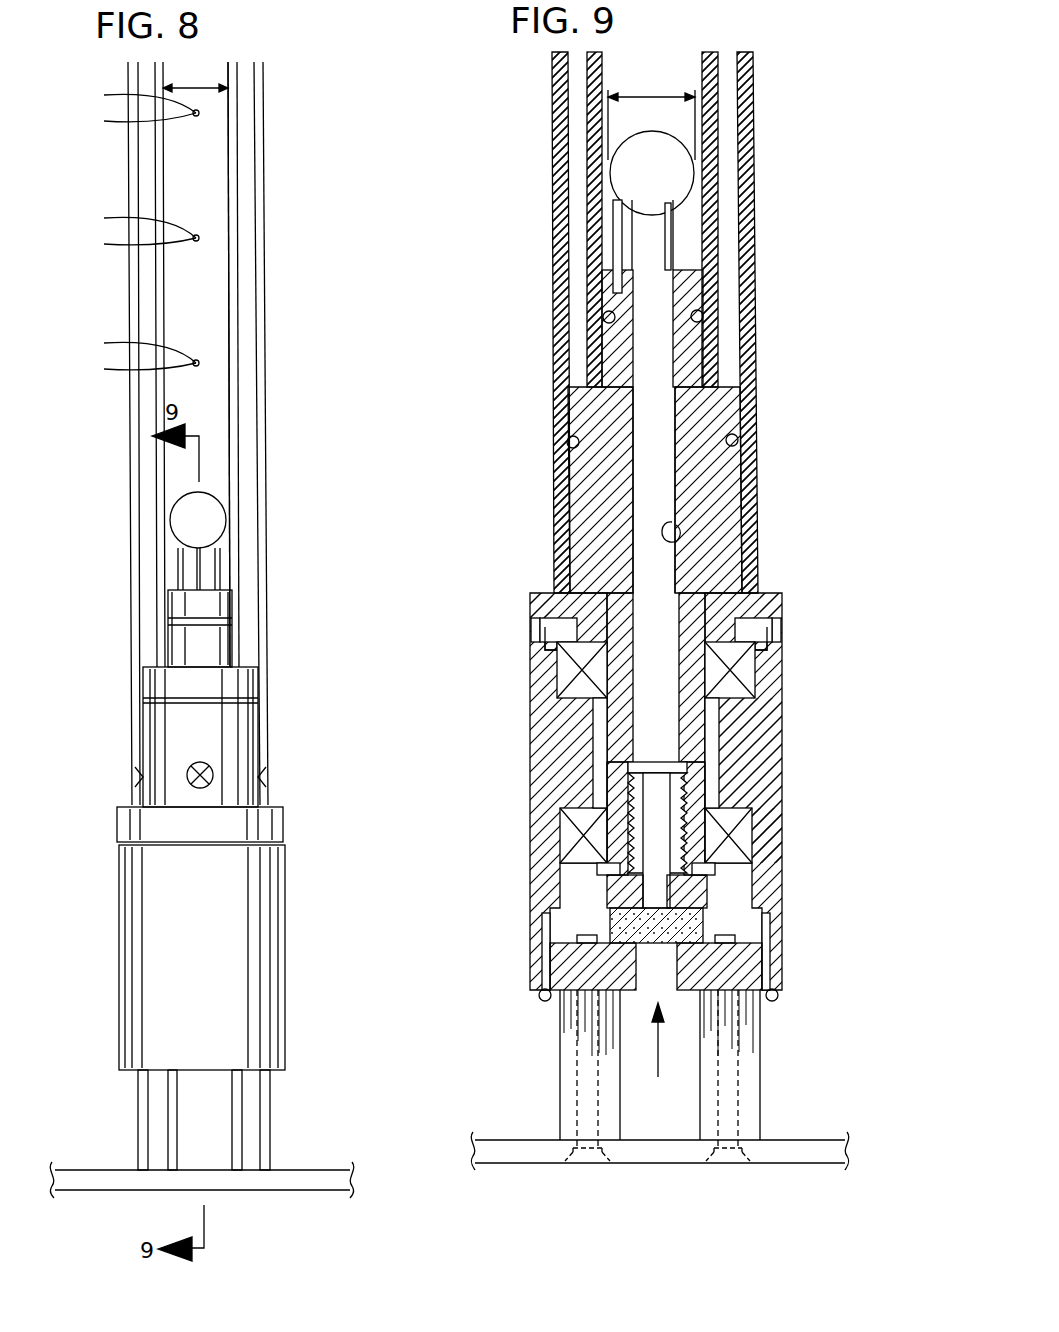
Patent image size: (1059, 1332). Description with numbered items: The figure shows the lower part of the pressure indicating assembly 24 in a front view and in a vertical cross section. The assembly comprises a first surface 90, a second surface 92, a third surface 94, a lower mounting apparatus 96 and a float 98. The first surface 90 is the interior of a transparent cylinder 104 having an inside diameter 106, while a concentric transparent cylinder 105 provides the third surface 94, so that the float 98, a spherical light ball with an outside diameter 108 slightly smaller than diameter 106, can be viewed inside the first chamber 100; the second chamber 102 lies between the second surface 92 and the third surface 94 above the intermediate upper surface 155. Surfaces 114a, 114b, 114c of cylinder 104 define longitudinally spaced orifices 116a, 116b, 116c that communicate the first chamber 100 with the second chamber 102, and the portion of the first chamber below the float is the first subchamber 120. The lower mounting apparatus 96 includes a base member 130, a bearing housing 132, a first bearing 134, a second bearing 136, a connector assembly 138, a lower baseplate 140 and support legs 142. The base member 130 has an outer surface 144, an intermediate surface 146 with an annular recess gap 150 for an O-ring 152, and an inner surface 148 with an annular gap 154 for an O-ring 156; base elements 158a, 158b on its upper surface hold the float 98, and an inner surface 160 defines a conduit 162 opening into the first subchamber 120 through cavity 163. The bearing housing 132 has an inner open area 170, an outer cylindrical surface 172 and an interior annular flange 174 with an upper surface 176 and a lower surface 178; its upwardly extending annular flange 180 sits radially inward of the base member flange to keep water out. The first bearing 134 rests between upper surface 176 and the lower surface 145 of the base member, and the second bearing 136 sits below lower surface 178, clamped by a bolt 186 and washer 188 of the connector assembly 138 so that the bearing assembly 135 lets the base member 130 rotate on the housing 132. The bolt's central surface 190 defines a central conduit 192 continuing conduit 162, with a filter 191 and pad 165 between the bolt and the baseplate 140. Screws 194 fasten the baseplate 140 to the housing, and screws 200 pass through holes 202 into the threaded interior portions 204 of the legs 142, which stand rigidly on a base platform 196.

In FIG. 8, the pressure indicating assembly 24 is at (260, 433).
In FIG. 8, the first surface 90 is at (231, 186).
In FIG. 8, the second surface 92 is at (240, 213).
In FIG. 8, the third surface 94 is at (247, 249).
In FIG. 8, the lower mounting apparatus 96 is at (297, 816).
In FIG. 8, the float 98 is at (212, 520).
In FIG. 9, the float 98 is at (680, 173).
In FIG. 8, the first chamber 100 is at (207, 310).
In FIG. 8, the second chamber 102 is at (245, 345).
In FIG. 8, the cylinder 104 is at (233, 375).
In FIG. 8, the cylinder 105 is at (262, 405).
In FIG. 8, the inside diameter 106 is at (207, 88).
In FIG. 9, the outside diameter 108 is at (667, 95).
In FIG. 8, the surface 114a is at (125, 348).
In FIG. 8, the surface 114b is at (125, 223).
In FIG. 8, the surface 114c is at (126, 99).
In FIG. 8, the orifice 116a is at (124, 369).
In FIG. 8, the orifice 116b is at (124, 244).
In FIG. 8, the orifice 116c is at (124, 121).
In FIG. 9, the first subchamber 120 is at (643, 68).
In FIG. 9, the base member 130 is at (727, 410).
In FIG. 9, the bearing housing 132 is at (770, 765).
In FIG. 9, the first bearing 134 is at (742, 690).
In FIG. 9, the bearing assembly 135 is at (633, 751).
In FIG. 9, the second bearing 136 is at (778, 865).
In FIG. 9, the connector assembly 138 is at (705, 892).
In FIG. 9, the lower baseplate 140 is at (760, 968).
In FIG. 9, the support legs 142 is at (567, 1048).
In FIG. 9, the outer surface 144 is at (777, 620).
In FIG. 9, the lower surface 145 is at (748, 672).
In FIG. 9, the intermediate surface 146 is at (742, 497).
In FIG. 9, the inner surface 148 is at (705, 300).
In FIG. 9, the annular recess gap 150 is at (739, 438).
In FIG. 9, the O-ring 152 is at (736, 462).
In FIG. 9, the annular gap 154 is at (720, 355).
In FIG. 9, the intermediate upper surface 155 is at (731, 387).
In FIG. 9, the O-ring 156 is at (696, 258).
In FIG. 9, the base element 158a is at (613, 245).
In FIG. 9, the base element 158b is at (671, 238).
In FIG. 9, the inner surface 160 is at (674, 533).
In FIG. 9, the conduit 162 is at (660, 555).
In FIG. 9, the cavity 163 is at (655, 276).
In FIG. 9, the damping pad 165 is at (742, 922).
In FIG. 9, the inner open area 170 is at (740, 940).
In FIG. 9, the outer cylindrical surface 172 is at (784, 812).
In FIG. 9, the interior annular flange 174 is at (732, 780).
In FIG. 9, the upper surface 176 is at (722, 728).
In FIG. 9, the lower surface 178 is at (750, 843).
In FIG. 9, the annular flange 180 is at (781, 592).
In FIG. 9, the bolt 186 is at (620, 897).
In FIG. 9, the washer 188 is at (605, 874).
In FIG. 9, the central surface 190 is at (628, 790).
In FIG. 9, the filter 191 is at (628, 915).
In FIG. 9, the central conduit 192 is at (650, 823).
In FIG. 9, the screws 194 is at (776, 1000).
In FIG. 9, the base platform 196 is at (800, 1145).
In FIG. 9, the screws 200 is at (578, 1122).
In FIG. 9, the hole 202 is at (578, 1108).
In FIG. 9, the threaded interior portion 204 is at (578, 1080).